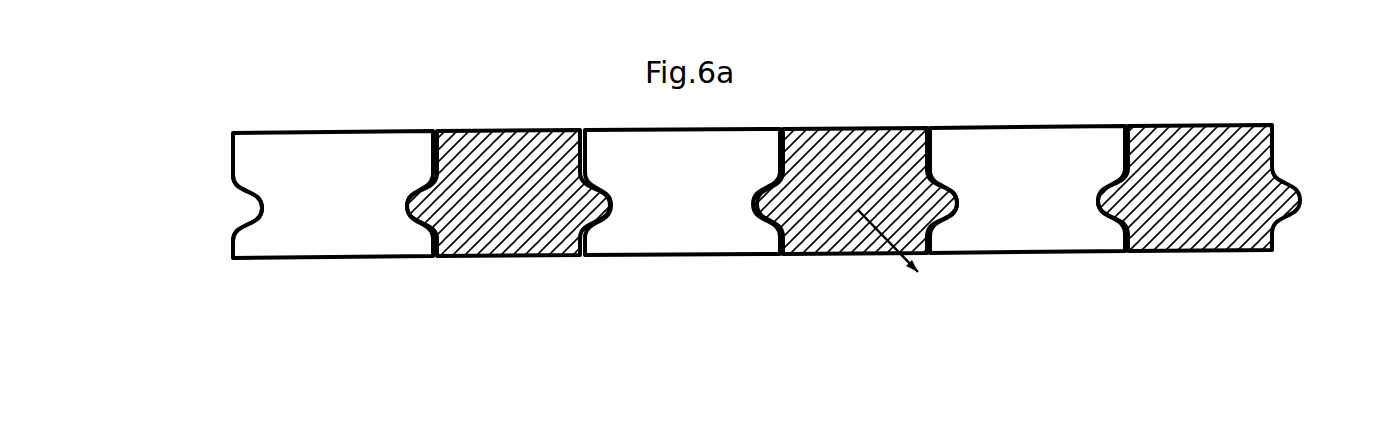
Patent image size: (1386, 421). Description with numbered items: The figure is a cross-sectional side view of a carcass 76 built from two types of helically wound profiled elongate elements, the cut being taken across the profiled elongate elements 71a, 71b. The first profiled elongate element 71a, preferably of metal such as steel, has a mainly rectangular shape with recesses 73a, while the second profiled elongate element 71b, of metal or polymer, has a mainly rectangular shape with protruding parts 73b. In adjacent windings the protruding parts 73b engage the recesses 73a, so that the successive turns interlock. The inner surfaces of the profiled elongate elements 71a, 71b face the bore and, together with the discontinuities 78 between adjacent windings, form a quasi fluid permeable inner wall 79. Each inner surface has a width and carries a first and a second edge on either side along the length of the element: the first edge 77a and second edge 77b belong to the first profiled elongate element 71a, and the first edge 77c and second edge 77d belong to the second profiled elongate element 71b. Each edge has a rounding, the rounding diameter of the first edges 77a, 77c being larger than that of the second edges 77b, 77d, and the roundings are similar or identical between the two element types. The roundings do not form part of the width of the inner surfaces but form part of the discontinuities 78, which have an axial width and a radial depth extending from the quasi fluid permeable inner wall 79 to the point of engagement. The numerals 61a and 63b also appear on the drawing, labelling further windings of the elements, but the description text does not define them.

The first profiled elongate element 71a is at (360, 216).
The second profiled elongate element 71b is at (535, 209).
The recess 73a is at (248, 207).
The protruding part 73b is at (933, 188).
The carcass 76 is at (1137, 277).
The first edge 77a is at (248, 258).
The second edge 77b is at (428, 260).
The first edge 77c is at (447, 260).
The second edge 77d is at (577, 263).
The discontinuity 78 is at (435, 273).
The quasi fluid permeable inner wall 79 is at (730, 272).
The tile 61a is at (985, 267).
The tile 63b is at (1073, 268).